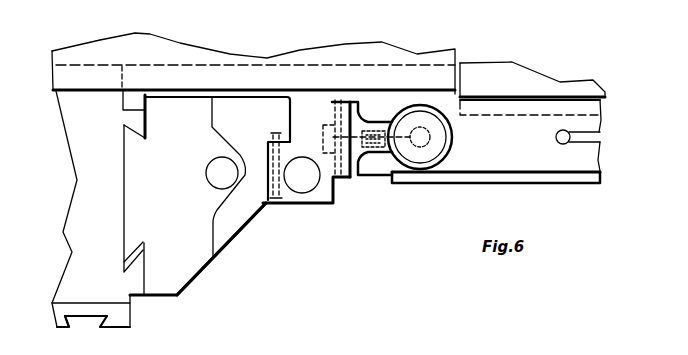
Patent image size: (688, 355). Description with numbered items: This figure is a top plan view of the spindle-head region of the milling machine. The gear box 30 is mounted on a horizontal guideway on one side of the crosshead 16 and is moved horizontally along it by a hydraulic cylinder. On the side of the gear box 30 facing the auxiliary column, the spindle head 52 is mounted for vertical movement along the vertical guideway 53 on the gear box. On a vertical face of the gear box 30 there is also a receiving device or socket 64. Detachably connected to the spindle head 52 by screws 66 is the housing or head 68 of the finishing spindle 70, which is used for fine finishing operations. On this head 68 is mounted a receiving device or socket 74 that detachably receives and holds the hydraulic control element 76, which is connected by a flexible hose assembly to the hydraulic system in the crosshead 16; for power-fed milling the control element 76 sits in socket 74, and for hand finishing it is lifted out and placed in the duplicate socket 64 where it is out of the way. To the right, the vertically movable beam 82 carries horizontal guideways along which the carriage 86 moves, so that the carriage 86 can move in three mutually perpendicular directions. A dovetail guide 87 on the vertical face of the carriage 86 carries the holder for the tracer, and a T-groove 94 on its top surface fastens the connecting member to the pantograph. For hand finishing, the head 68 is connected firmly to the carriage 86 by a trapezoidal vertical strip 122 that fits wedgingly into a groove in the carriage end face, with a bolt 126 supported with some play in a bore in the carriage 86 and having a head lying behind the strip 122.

The crosshead 16 is at (154, 50).
The gear box 30 is at (75, 270).
The spindle head 52 is at (170, 293).
The vertical guideway 53 is at (133, 140).
The receiving device or socket 64 is at (125, 310).
The screws 66 is at (275, 205).
The housing or head 68 is at (328, 200).
The finishing spindle 70 is at (303, 190).
The receiving device or socket 74 is at (345, 180).
The hydraulic control element 76 is at (385, 165).
The beam 82 is at (532, 80).
The carriage 86 is at (595, 110).
The dovetail guide 87 is at (555, 178).
The T-groove 94 is at (587, 140).
The vertical strip 122 is at (347, 93).
The bolt 126 is at (347, 133).